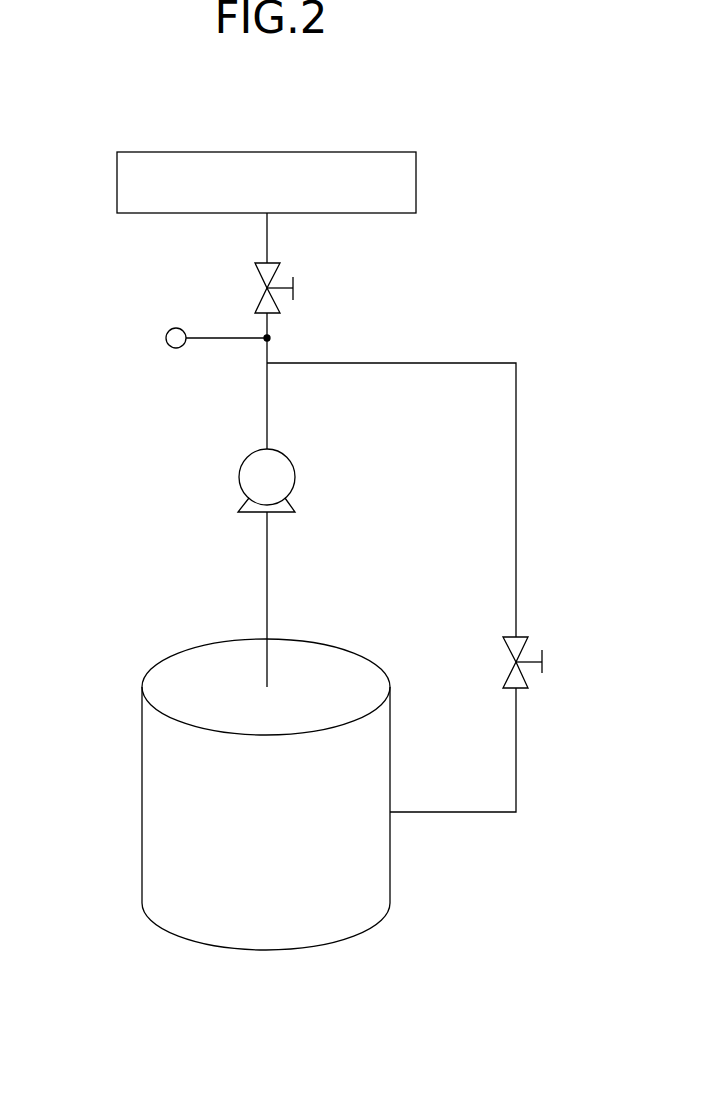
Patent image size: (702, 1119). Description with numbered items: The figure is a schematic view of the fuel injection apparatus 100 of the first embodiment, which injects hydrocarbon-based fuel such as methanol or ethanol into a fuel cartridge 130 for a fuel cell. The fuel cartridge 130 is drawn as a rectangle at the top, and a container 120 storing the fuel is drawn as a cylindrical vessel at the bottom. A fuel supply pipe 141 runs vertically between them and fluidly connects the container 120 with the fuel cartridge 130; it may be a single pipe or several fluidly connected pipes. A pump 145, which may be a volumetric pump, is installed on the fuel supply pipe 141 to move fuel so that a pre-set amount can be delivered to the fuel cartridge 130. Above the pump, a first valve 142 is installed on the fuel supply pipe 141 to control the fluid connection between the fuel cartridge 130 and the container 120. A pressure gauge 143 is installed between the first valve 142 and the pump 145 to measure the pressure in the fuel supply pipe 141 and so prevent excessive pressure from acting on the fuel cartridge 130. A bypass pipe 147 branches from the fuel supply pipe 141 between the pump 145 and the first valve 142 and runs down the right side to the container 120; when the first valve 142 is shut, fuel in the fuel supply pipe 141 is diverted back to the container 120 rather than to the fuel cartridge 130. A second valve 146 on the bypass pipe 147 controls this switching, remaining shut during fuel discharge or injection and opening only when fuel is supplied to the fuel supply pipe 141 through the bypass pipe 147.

The fuel injection apparatus 100 is at (222, 118).
The container 120 is at (162, 792).
The fuel cartridge 130 is at (417, 182).
The fuel supply pipe 141 is at (267, 405).
The first valve 142 is at (255, 283).
The pressure gauge 143 is at (166, 338).
The pump 145 is at (239, 477).
The second valve 146 is at (503, 650).
The bypass pipe 147 is at (516, 480).